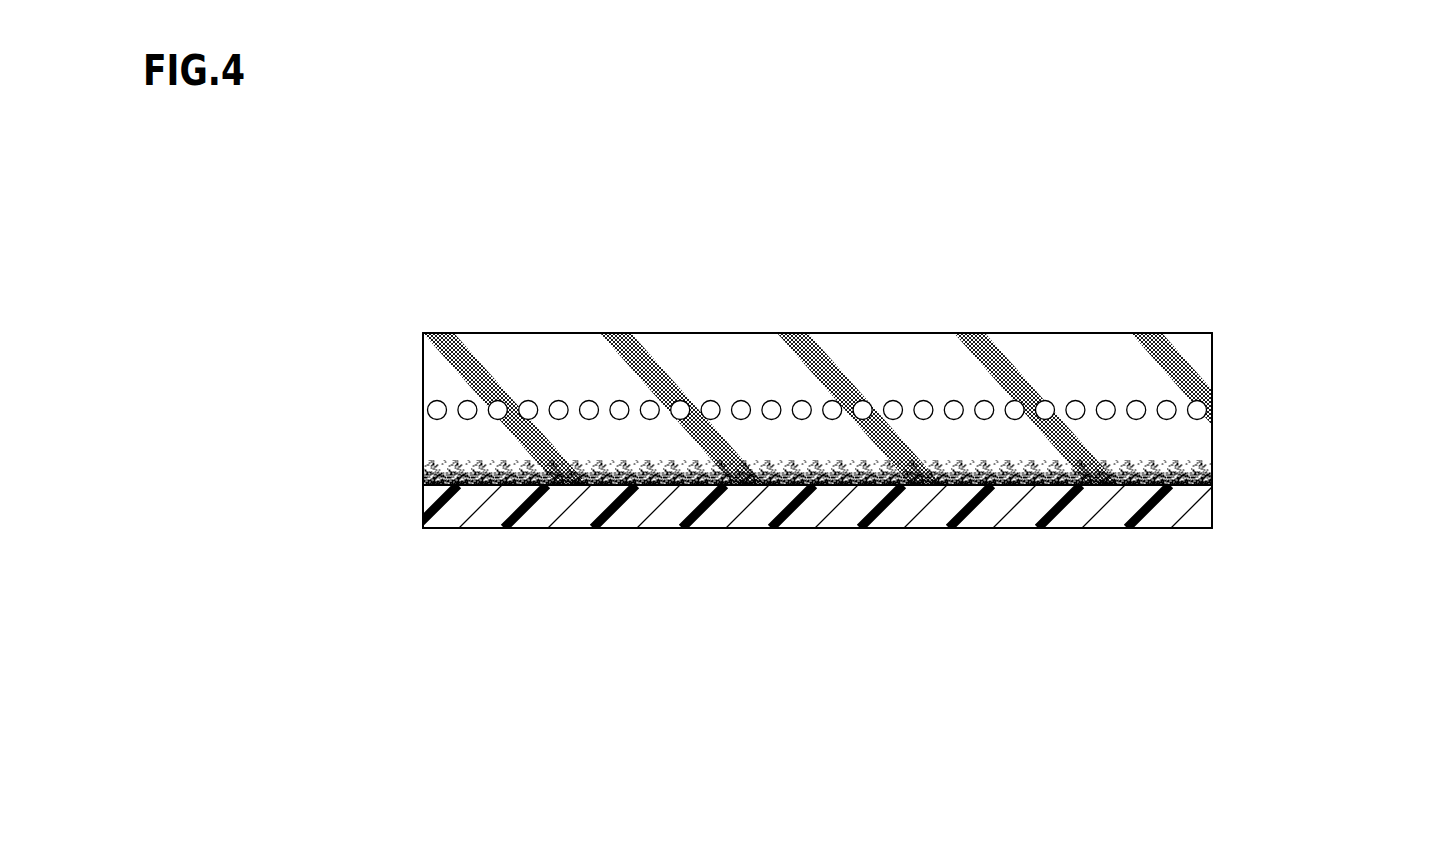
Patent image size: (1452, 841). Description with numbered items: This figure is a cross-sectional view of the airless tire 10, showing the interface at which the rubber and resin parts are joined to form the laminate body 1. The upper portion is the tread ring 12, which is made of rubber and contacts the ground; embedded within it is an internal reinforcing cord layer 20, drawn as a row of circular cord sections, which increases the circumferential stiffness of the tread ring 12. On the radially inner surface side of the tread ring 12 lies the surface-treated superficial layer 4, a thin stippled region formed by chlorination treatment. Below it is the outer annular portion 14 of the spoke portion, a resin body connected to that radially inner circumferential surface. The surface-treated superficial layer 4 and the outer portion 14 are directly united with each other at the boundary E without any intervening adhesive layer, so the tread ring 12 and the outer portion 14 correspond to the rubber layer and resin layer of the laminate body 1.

The laminate body 1 is at (1347, 393).
The airless tire 10 is at (1053, 290).
The tread ring 12 is at (1213, 410).
The outer annular portion 14 is at (1210, 513).
The reinforcing cord layer 20 is at (515, 388).
The surface-treated superficial layer 4 is at (470, 462).
The interface E is at (848, 487).